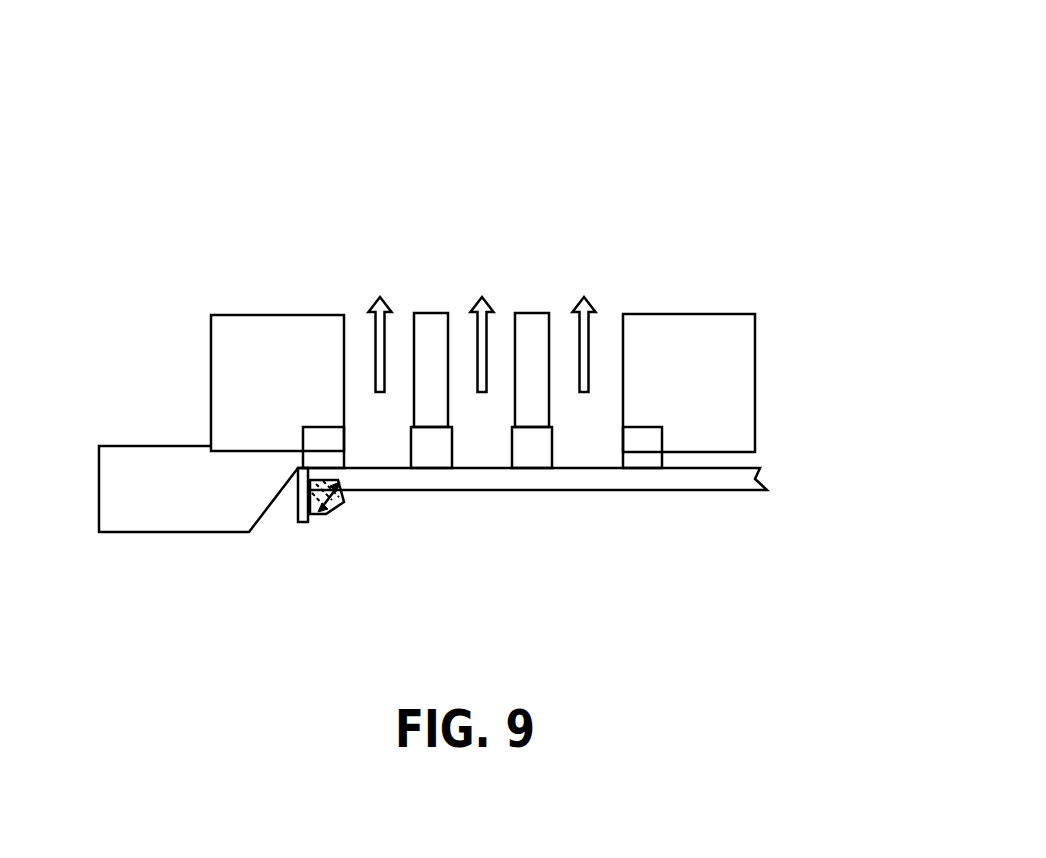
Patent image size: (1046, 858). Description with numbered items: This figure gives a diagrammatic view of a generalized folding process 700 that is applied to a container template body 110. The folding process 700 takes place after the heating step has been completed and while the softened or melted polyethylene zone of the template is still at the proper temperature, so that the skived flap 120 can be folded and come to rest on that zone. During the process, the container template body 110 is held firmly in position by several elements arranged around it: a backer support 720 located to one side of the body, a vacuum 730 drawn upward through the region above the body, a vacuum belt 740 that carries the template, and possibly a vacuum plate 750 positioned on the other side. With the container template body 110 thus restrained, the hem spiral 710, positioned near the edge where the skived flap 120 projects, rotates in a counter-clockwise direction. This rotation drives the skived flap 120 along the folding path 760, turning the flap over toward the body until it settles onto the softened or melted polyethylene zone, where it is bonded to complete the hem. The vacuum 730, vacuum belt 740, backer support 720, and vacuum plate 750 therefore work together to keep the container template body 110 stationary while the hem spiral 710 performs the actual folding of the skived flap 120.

The folding process 700 is at (731, 122).
The hem spiral 710 is at (157, 444).
The backer support 720 is at (288, 313).
The vacuum 730 is at (584, 297).
The vacuum belt 740 is at (552, 442).
The vacuum plate 750 is at (653, 313).
The folding path 760 is at (322, 513).
The container template body 110 is at (468, 490).
The skived flap 120 is at (293, 518).